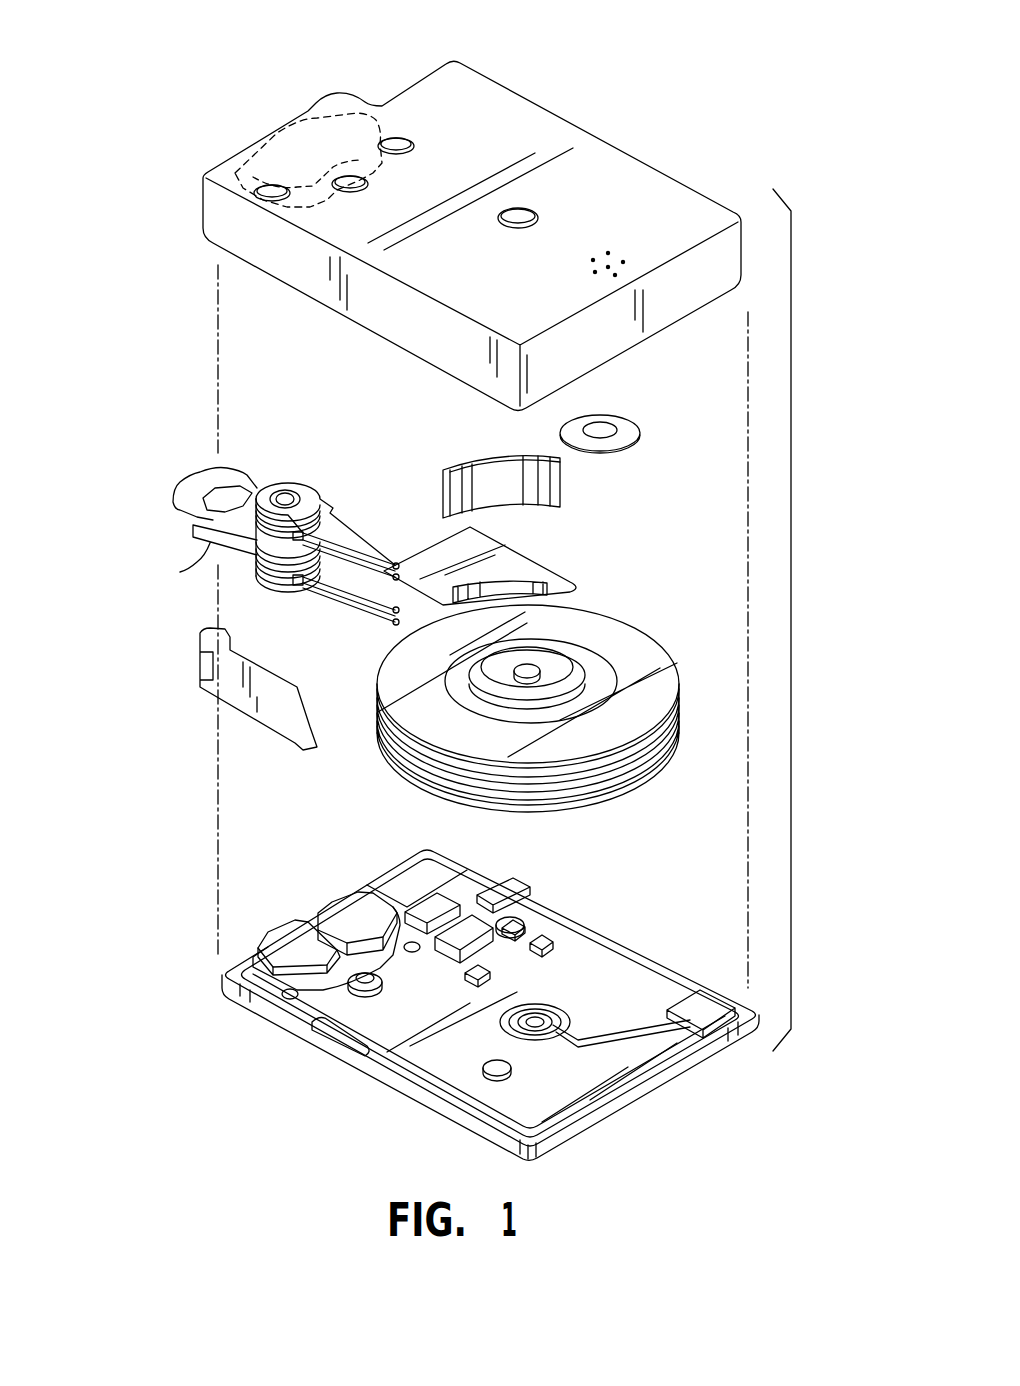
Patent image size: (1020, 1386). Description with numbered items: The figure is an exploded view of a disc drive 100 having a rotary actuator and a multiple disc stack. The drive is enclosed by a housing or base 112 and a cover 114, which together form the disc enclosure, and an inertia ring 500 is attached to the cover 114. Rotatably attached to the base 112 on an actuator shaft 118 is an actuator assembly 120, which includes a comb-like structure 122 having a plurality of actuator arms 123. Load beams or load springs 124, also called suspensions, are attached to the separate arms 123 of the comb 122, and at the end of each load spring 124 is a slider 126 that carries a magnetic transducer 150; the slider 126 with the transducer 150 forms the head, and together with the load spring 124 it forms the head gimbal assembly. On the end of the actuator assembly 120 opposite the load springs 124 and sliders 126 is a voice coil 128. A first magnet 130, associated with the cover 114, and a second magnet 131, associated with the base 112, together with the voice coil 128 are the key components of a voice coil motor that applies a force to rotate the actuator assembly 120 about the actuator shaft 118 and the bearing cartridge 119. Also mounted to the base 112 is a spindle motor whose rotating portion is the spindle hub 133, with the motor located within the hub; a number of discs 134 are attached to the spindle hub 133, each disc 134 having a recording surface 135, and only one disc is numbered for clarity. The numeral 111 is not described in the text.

The disc drive 100 is at (641, 88).
The cover 114 is at (632, 180).
The first magnet 130 is at (307, 123).
The inertia ring 500 is at (623, 423).
The magnetic transducer 150 is at (400, 563).
The actuator assembly 120 is at (208, 548).
The bearing cartridge 119 is at (268, 487).
The actuator shaft 118 is at (284, 495).
The comb-like structure 122 is at (302, 595).
The actuator arms 123 is at (308, 490).
The load springs 124 is at (355, 536).
The slider 126 is at (398, 565).
The voice coil 128 is at (197, 498).
The discs 134 is at (653, 647).
The recording surface 135 is at (680, 707).
The hub 111 is at (593, 663).
The spindle hub 133 is at (535, 668).
The base 112 is at (652, 977).
The second magnet 131 is at (282, 937).